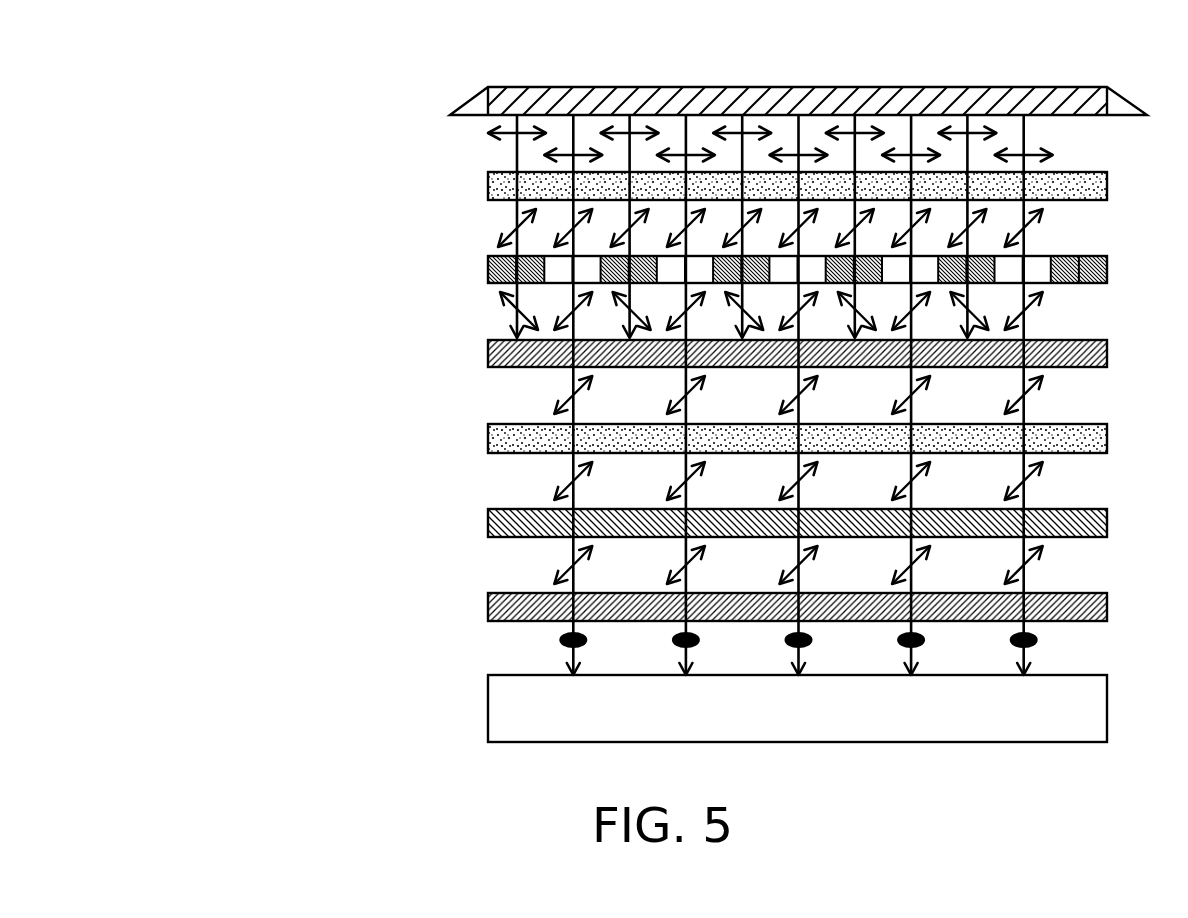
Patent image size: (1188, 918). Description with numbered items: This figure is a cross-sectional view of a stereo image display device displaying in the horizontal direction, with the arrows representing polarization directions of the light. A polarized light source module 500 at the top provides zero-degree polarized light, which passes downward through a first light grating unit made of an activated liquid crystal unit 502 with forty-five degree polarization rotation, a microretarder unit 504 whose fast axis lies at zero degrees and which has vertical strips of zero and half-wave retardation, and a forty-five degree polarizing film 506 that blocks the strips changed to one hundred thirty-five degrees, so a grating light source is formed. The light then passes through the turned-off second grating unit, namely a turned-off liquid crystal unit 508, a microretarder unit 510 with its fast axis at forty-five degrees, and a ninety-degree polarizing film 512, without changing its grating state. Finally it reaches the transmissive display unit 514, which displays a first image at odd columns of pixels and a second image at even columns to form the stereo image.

The polarized light source module 500 is at (667, 86).
The liquid crystal unit with 45 degree polarization 502 is at (642, 167).
The microretarder unit 504 is at (662, 267).
The polarizing film 506 is at (657, 351).
The liquid crystal unit with 45 degree polarization 508 is at (653, 419).
The microretarder unit 510 is at (662, 519).
The polarizing film 512 is at (654, 606).
The transmissive display unit 514 is at (636, 700).